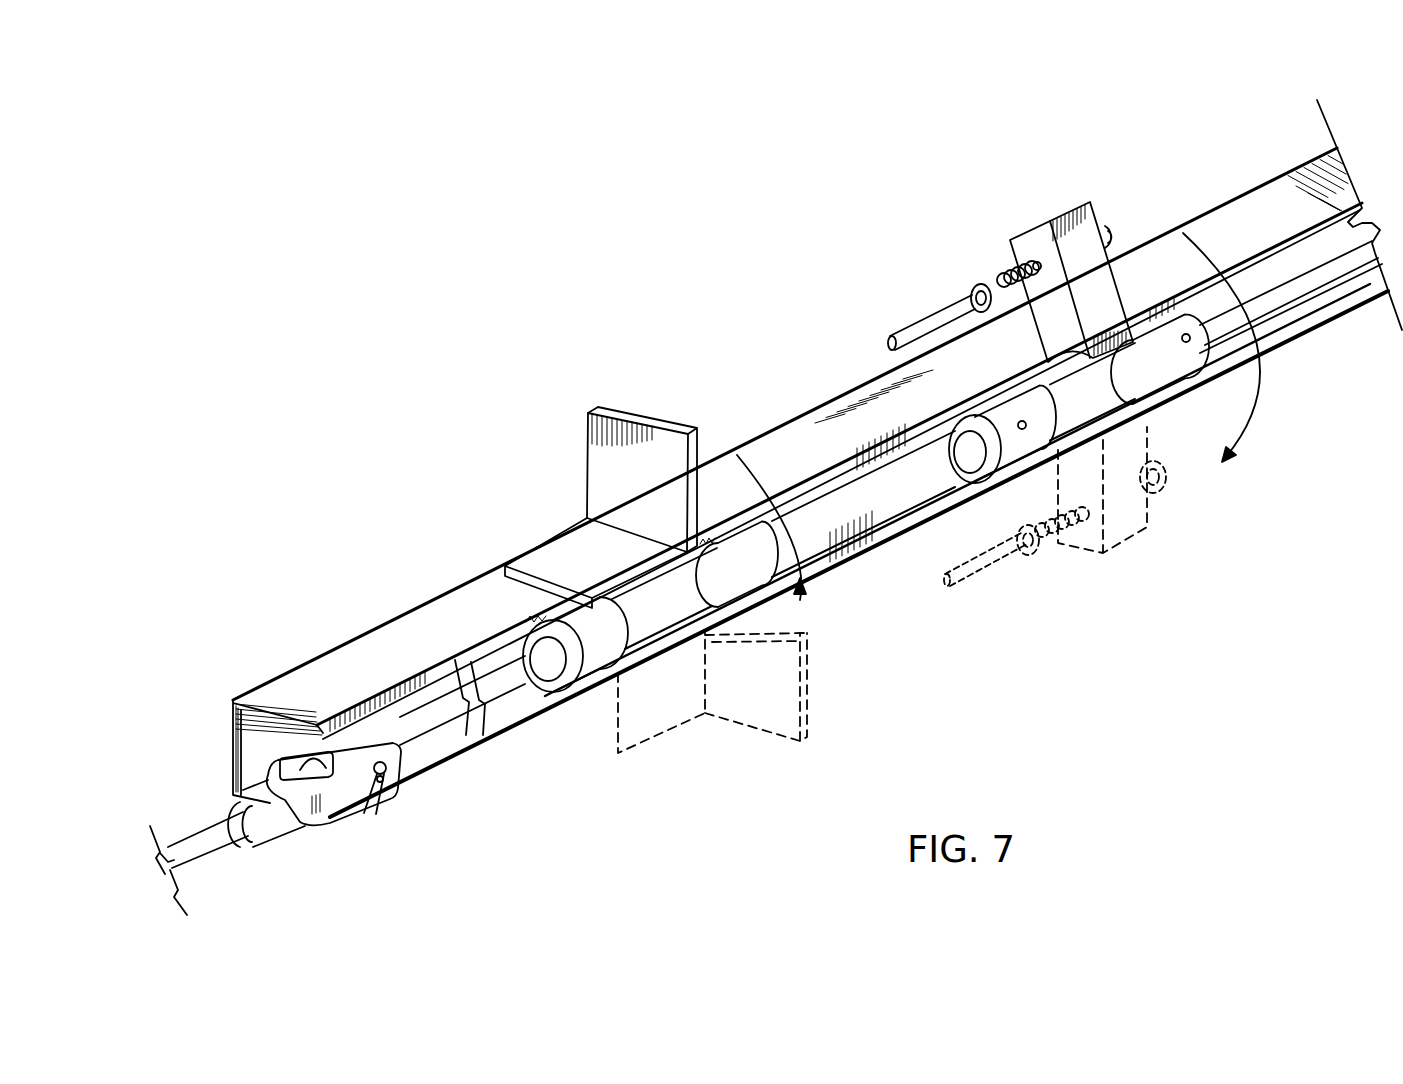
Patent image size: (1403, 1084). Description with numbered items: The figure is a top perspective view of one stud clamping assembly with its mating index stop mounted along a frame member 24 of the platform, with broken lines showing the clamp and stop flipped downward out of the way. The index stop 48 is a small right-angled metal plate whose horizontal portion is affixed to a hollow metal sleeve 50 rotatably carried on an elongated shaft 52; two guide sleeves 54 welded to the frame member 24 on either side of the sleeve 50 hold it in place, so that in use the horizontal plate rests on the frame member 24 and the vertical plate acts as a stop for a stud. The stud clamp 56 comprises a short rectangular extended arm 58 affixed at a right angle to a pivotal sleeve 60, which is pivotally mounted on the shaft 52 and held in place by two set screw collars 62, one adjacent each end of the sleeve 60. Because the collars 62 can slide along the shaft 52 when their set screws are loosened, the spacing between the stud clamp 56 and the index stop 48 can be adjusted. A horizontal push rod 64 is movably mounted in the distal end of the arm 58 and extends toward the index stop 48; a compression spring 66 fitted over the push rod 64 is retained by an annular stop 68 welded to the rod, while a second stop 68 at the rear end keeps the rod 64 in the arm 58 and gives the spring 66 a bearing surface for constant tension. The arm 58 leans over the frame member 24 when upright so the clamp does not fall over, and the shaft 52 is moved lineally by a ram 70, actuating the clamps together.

The frame member 24 is at (393, 643).
The index stop 48 is at (620, 480).
The hollow metal sleeve 50 is at (673, 593).
The elongated shaft 52 is at (410, 727).
The guide sleeve 54 is at (602, 627).
The stud clamp 56 is at (1057, 237).
The extended arm 58 is at (1069, 233).
The pivotal sleeve 60 is at (1108, 375).
The set screw collar 62 is at (955, 395).
The push rod 64 is at (917, 327).
The compression spring 66 is at (1000, 270).
The annular stop 68 is at (969, 283).
The ram 70 is at (213, 837).